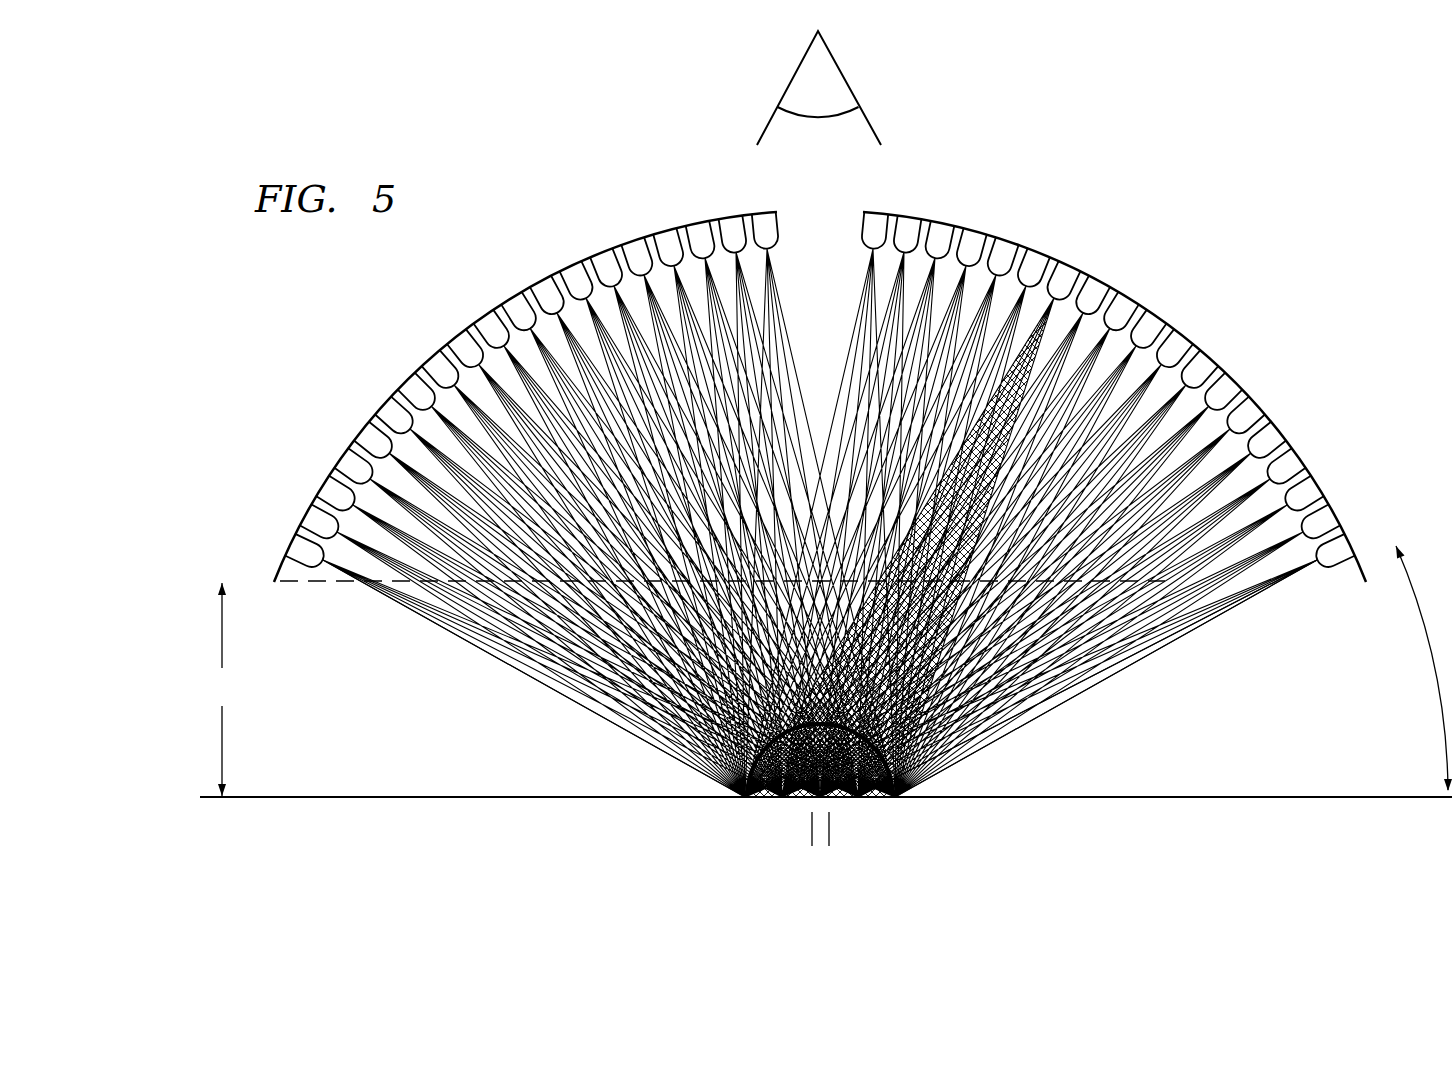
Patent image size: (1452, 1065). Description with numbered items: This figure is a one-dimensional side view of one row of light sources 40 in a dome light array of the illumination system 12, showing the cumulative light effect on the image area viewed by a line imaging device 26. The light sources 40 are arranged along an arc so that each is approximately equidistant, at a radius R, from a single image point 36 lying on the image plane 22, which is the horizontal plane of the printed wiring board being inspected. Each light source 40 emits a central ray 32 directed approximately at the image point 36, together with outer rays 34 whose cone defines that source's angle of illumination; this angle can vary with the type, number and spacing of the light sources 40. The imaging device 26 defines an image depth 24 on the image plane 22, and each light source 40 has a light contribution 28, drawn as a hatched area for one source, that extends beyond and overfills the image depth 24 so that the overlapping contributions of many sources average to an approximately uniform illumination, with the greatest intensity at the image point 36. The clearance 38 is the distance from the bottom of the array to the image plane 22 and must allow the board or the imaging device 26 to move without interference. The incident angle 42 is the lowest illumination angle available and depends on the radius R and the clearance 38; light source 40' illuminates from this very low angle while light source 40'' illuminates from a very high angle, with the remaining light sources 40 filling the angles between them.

The imaging device 26 is at (845, 72).
The illumination system 12 is at (823, 214).
The light sources 40 is at (523, 380).
The light source 40'' is at (900, 192).
The light source 40' is at (1363, 530).
The light contribution 28 is at (1040, 323).
The image plane 22 is at (614, 800).
The image point 36 is at (822, 799).
The image depth 24 is at (778, 870).
The clearance 38 is at (222, 689).
The incident angle 42 is at (1424, 668).
The radius R is at (413, 622).
The central ray 32 is at (1227, 616).
The outer rays 34 is at (1187, 610).